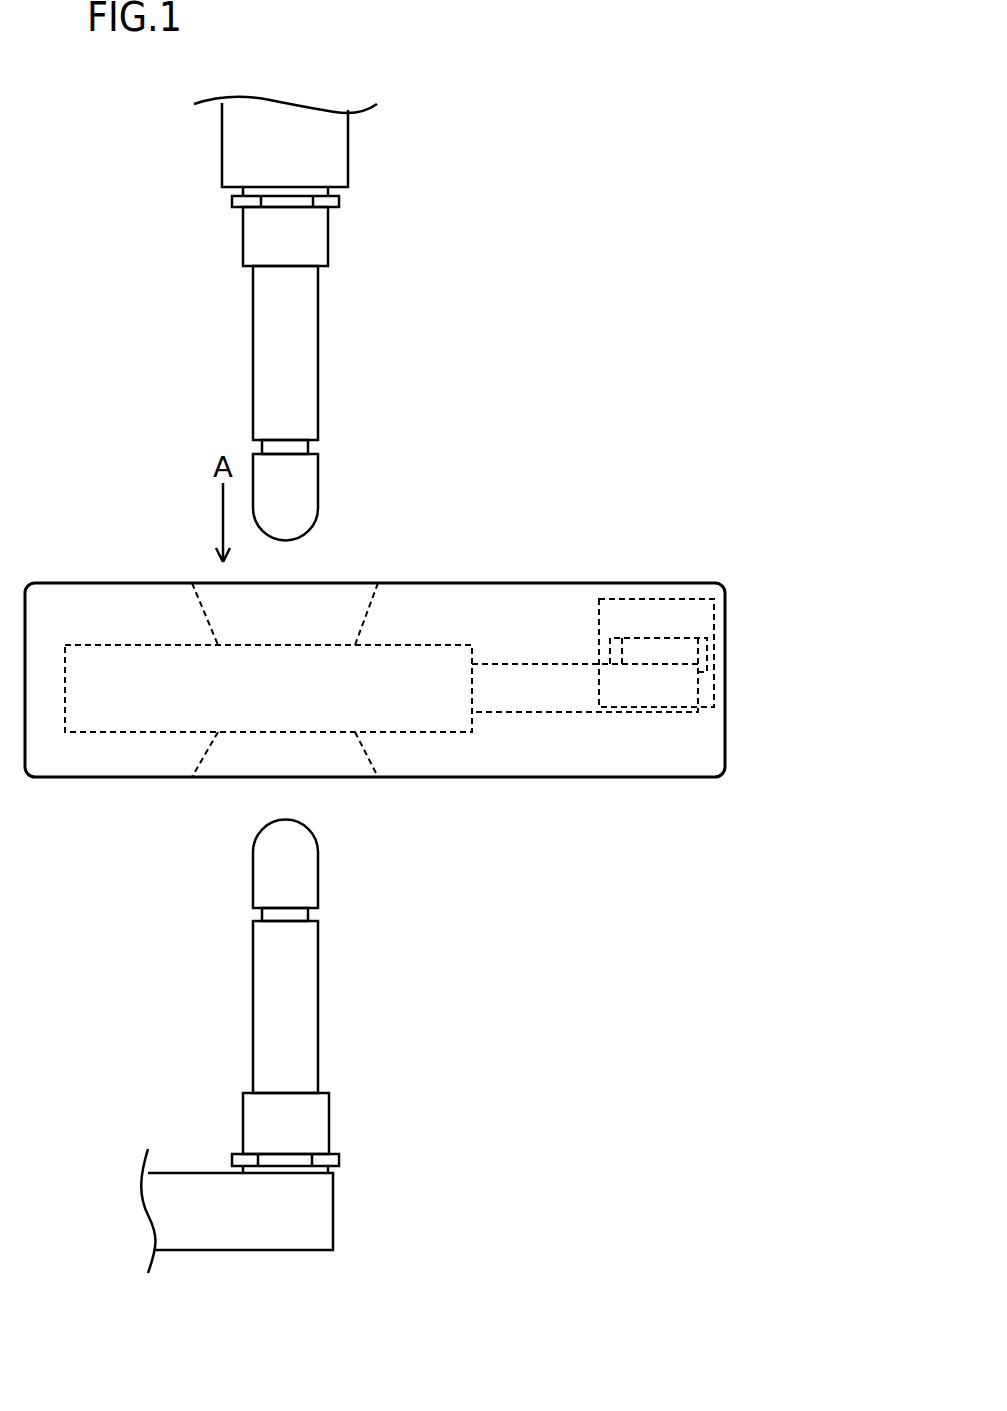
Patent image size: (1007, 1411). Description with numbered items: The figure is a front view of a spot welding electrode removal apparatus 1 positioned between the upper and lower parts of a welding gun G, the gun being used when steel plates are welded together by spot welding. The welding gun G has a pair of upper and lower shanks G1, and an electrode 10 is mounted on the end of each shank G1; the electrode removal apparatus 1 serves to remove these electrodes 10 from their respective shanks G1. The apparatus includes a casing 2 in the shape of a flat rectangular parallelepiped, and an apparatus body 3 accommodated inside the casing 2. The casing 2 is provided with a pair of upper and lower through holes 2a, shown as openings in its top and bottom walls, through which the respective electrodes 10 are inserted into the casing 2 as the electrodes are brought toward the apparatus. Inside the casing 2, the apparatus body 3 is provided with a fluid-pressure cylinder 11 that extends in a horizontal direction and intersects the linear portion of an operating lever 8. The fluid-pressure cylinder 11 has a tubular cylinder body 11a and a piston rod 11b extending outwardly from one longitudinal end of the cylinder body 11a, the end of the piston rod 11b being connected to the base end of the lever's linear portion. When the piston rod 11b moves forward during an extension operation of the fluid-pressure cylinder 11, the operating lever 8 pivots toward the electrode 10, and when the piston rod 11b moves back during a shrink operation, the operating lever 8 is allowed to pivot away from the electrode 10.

The welding gun G is at (432, 198).
The shank G1 is at (318, 345).
The electrode 10 is at (318, 485).
The spot welding electrode removal apparatus 1 is at (426, 655).
The casing 2 is at (517, 583).
The through hole 2a is at (363, 618).
The apparatus body 3 is at (100, 643).
The operating lever 8 is at (637, 728).
The fluid-pressure cylinder 11 is at (690, 595).
The cylinder body 11a is at (714, 614).
The piston rod 11b is at (700, 651).